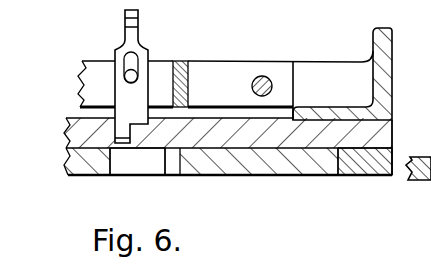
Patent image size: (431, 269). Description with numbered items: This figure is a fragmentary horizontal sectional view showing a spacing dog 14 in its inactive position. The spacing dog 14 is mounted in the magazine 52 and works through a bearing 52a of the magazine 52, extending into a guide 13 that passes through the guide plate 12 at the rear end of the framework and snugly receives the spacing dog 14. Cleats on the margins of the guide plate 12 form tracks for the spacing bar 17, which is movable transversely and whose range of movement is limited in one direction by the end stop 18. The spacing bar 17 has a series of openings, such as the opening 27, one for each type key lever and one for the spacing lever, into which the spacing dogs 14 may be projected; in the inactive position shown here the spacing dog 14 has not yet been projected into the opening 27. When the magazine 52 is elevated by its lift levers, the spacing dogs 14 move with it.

The guide plate 12 is at (393, 135).
The guide 13 is at (113, 137).
The spacing dog 14 is at (131, 43).
The spacing bar 17 is at (275, 177).
The end stop 18 is at (368, 177).
The opening 27 is at (123, 165).
The magazine 52 is at (281, 62).
The bearing 52a is at (148, 72).